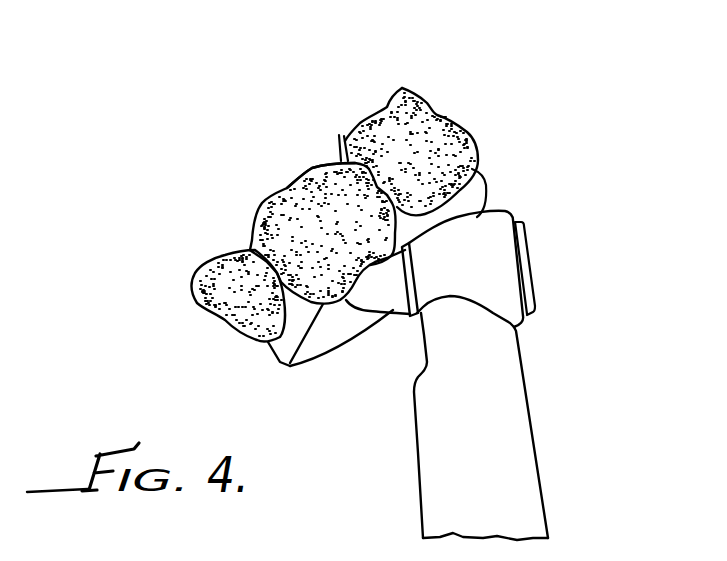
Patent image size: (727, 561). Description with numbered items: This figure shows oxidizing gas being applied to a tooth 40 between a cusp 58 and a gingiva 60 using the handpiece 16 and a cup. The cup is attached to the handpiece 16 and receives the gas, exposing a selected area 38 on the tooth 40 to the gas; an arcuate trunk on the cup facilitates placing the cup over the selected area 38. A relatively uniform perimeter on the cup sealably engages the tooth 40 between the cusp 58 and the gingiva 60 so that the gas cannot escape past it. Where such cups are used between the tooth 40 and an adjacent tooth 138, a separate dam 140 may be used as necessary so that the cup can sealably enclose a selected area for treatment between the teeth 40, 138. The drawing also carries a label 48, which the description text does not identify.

The handpiece 16 is at (531, 423).
The selected area 38 is at (345, 302).
The tooth 40 is at (313, 166).
The collar 48 is at (397, 307).
The cusp 58 is at (378, 236).
The gingiva 60 is at (284, 365).
The tooth 138 is at (410, 87).
The dam 140 is at (340, 135).